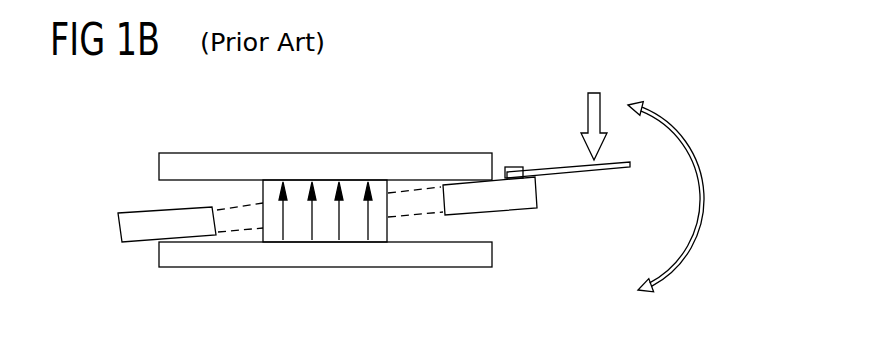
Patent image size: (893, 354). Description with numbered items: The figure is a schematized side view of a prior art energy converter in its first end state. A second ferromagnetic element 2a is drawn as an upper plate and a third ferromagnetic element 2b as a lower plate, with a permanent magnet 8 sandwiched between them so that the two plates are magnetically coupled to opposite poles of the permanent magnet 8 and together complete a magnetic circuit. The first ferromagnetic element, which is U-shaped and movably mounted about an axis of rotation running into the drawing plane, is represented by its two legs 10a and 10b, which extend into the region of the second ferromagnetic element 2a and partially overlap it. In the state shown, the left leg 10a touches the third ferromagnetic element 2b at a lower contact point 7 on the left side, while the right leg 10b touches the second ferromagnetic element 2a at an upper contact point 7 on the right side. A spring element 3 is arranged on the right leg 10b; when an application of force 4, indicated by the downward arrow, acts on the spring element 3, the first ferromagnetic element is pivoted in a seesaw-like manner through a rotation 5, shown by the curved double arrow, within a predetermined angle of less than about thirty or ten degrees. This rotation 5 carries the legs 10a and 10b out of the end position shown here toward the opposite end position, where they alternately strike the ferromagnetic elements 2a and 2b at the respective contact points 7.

The second ferromagnetic element 2a is at (158, 172).
The third ferromagnetic element 2b is at (158, 260).
The spring element 3 is at (633, 167).
The application of force 4 is at (587, 105).
The rotation 5 is at (690, 143).
The contact points 7 is at (139, 251).
The permanent magnet 8 is at (380, 233).
The left leg 10a is at (130, 230).
The right leg 10b is at (502, 205).